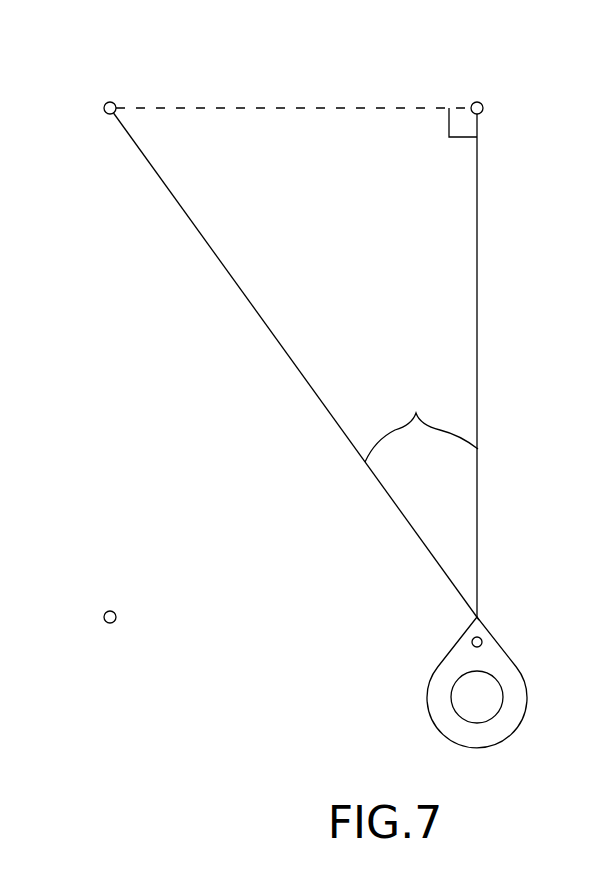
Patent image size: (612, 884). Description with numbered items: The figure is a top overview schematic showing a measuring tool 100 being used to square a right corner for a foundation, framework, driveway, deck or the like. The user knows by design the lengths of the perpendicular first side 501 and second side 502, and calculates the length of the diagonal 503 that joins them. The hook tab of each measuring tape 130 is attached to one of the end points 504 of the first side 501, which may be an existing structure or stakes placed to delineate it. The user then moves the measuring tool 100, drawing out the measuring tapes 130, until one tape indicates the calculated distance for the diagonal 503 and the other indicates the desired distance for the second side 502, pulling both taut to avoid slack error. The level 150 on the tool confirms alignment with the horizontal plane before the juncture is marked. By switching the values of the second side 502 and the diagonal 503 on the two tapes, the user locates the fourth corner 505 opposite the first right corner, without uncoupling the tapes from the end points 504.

The measuring tool 100 is at (412, 657).
The measuring tape 130 is at (421, 423).
The level 150 is at (482, 640).
The first side 501 is at (196, 98).
The second side 502 is at (490, 321).
The diagonal 503 is at (270, 355).
The end point 504 is at (103, 108).
The fourth corner 505 is at (103, 615).